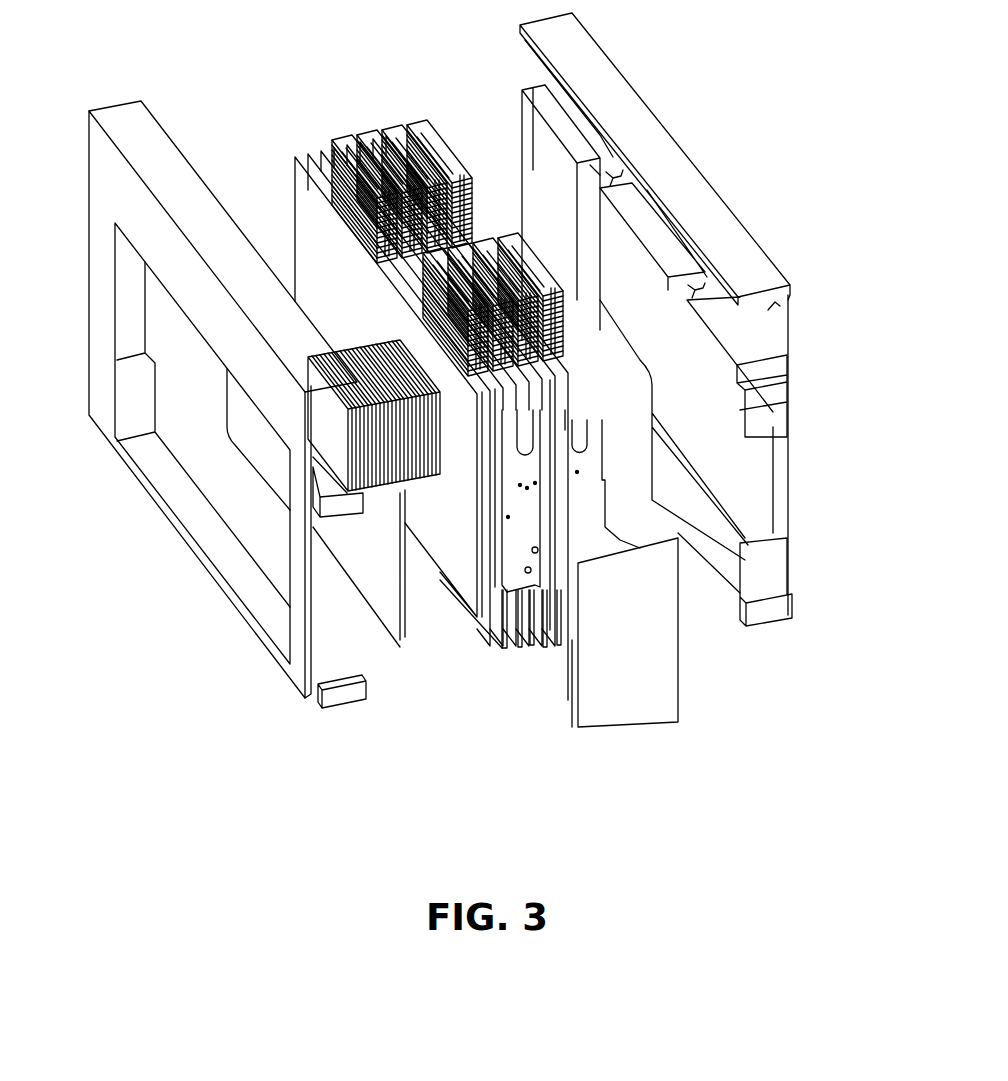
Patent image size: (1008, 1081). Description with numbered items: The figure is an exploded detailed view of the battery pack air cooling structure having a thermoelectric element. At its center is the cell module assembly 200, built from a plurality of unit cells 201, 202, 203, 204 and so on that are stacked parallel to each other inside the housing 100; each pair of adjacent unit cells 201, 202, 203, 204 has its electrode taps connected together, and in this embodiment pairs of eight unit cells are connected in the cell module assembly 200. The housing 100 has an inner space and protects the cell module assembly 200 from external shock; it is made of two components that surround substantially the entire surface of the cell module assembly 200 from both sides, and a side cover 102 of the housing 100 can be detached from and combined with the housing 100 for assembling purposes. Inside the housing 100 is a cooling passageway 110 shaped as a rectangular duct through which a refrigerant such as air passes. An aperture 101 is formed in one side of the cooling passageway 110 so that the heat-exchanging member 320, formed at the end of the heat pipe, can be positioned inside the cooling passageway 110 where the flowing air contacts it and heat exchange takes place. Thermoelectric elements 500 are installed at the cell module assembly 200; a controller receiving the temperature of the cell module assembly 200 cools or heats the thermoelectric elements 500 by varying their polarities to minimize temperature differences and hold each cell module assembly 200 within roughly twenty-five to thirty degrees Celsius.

The housing 100 is at (716, 166).
The aperture 101 is at (613, 173).
The side cover 102 is at (630, 665).
The cooling passageway 110 is at (778, 306).
The cell module assembly 200 is at (466, 504).
The unit cell 201 is at (502, 650).
The unit cell 202 is at (517, 647).
The unit cell 203 is at (533, 640).
The fourth plate 204 is at (545, 640).
The heat-exchanging member 320 is at (421, 111).
The thermoelectric element 500 is at (337, 446).